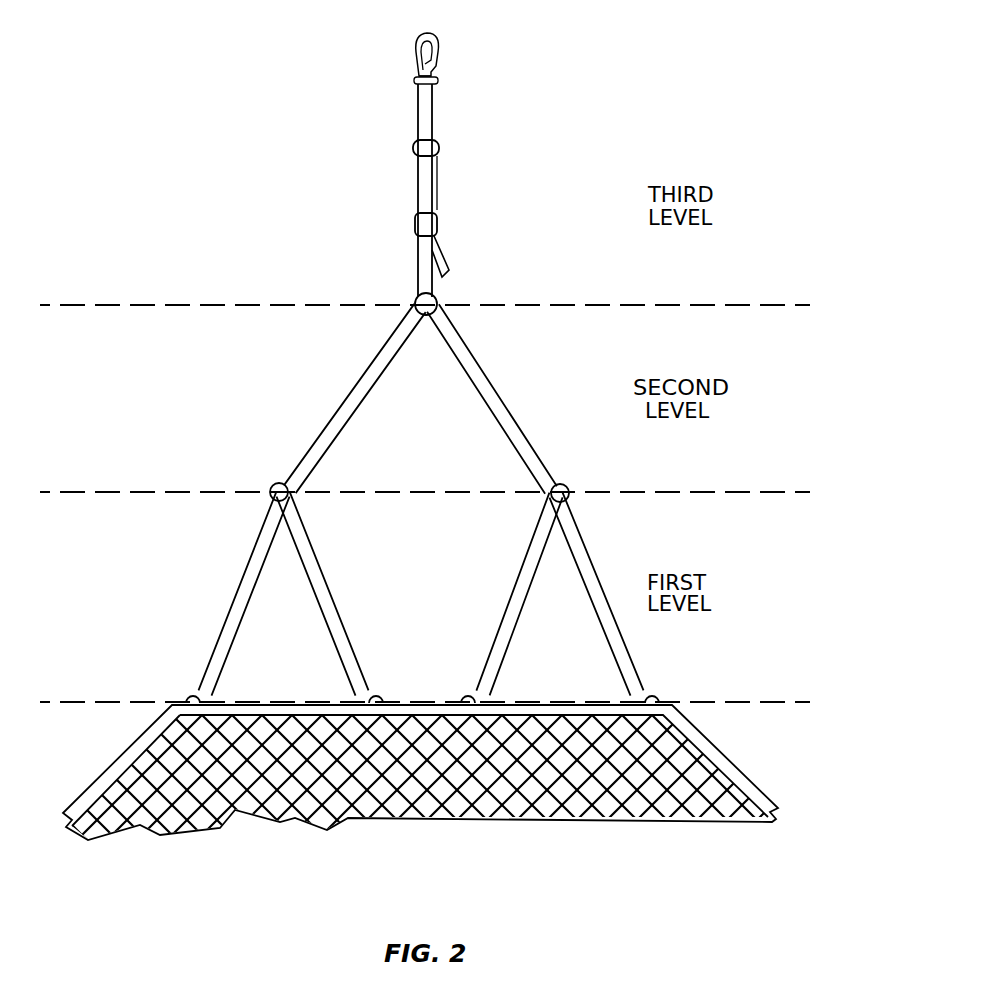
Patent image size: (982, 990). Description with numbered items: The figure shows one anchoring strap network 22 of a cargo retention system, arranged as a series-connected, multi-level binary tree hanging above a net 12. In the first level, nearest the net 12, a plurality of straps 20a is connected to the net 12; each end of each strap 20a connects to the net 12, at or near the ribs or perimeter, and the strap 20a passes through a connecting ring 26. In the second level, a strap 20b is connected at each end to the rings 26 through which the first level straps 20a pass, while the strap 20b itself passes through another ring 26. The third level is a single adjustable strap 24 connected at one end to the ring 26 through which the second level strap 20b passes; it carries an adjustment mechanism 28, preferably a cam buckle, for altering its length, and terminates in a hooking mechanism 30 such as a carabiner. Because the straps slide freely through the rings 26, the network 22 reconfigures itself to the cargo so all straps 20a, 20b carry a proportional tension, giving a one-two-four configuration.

The net 12 is at (775, 762).
The anchoring strap network 22 is at (237, 124).
The hooking mechanism 30 is at (437, 40).
The adjustable strap 24 is at (419, 184).
The adjustment mechanism 28 is at (416, 227).
The connecting ring 26 is at (271, 486).
The second level strap 20b is at (349, 403).
The first level strap 20a is at (238, 607).